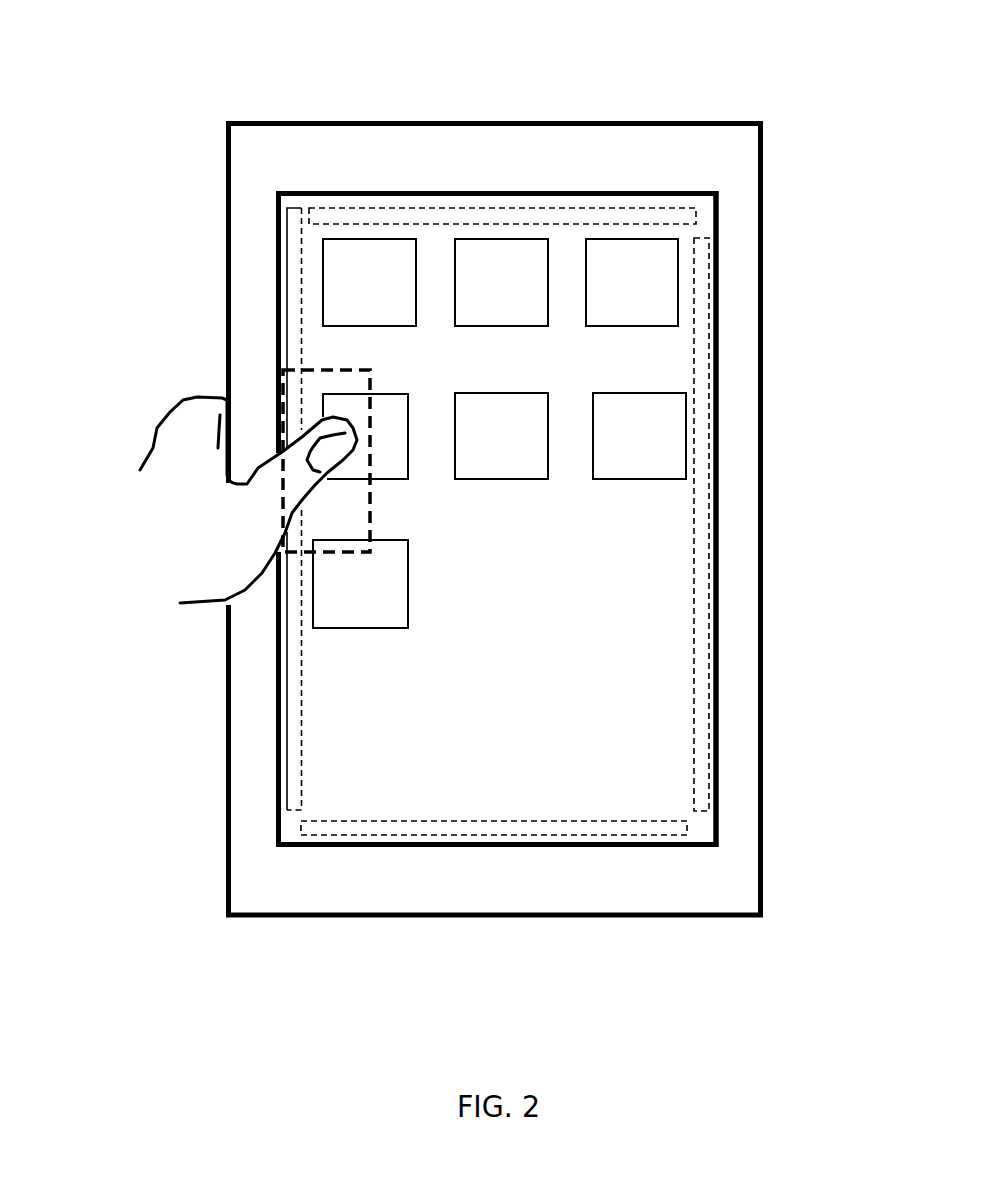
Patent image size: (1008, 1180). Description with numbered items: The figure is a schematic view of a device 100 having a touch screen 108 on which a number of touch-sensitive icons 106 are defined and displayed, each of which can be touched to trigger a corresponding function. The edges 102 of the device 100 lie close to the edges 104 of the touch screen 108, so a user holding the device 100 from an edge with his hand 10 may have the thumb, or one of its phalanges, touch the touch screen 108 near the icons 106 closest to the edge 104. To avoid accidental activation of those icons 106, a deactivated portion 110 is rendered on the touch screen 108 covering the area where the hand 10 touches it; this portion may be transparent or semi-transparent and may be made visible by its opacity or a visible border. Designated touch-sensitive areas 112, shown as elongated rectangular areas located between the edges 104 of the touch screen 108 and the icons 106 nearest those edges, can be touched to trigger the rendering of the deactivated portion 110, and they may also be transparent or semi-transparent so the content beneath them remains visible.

The hand 10 is at (135, 438).
The device 100 is at (683, 97).
The edges of the device 102 is at (762, 231).
The edges of the touch screen 104 is at (717, 385).
The touch-sensitive icons 106 is at (638, 443).
The touch screen 108 is at (640, 697).
The deactivated portion 110 is at (310, 523).
The designated touch-sensitive areas 112 is at (298, 700).